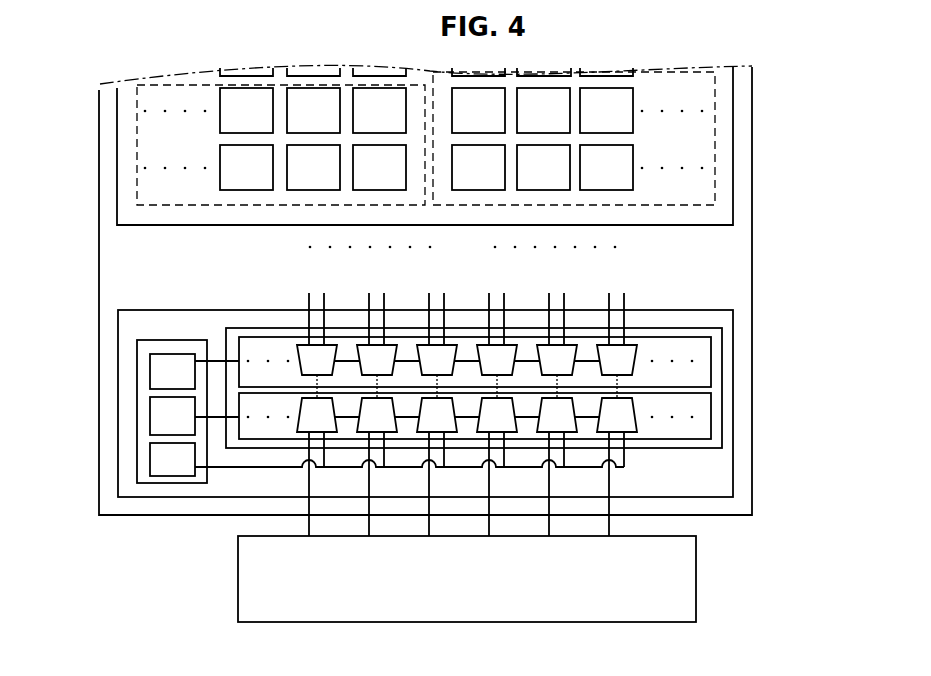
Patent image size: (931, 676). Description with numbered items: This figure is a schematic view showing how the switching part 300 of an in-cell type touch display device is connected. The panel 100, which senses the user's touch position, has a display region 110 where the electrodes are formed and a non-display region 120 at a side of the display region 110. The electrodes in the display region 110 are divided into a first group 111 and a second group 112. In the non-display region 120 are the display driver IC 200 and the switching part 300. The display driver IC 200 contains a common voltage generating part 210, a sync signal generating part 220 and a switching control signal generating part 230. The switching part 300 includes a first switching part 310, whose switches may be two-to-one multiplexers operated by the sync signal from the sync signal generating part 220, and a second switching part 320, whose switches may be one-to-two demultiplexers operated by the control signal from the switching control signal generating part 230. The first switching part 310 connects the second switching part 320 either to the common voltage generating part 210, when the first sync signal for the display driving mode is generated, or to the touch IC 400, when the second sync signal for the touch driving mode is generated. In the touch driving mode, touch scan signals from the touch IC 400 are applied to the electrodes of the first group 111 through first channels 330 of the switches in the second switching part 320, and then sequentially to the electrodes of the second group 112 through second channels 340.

The panel 100 is at (752, 92).
The display region 110 is at (733, 117).
The first group 111 is at (133, 143).
The second group 112 is at (715, 157).
The non-display region 120 is at (733, 322).
The display driver IC 200 is at (330, 406).
The common voltage generating part 210 is at (150, 458).
The sync signal generating part 220 is at (150, 420).
The switching control signal generating part 230 is at (150, 370).
The switching part 300 is at (722, 390).
The first switching part 310 is at (711, 430).
The second switching part 320 is at (711, 350).
The first channels 330 is at (309, 300).
The second channels 340 is at (324, 298).
The touch IC 400 is at (696, 578).